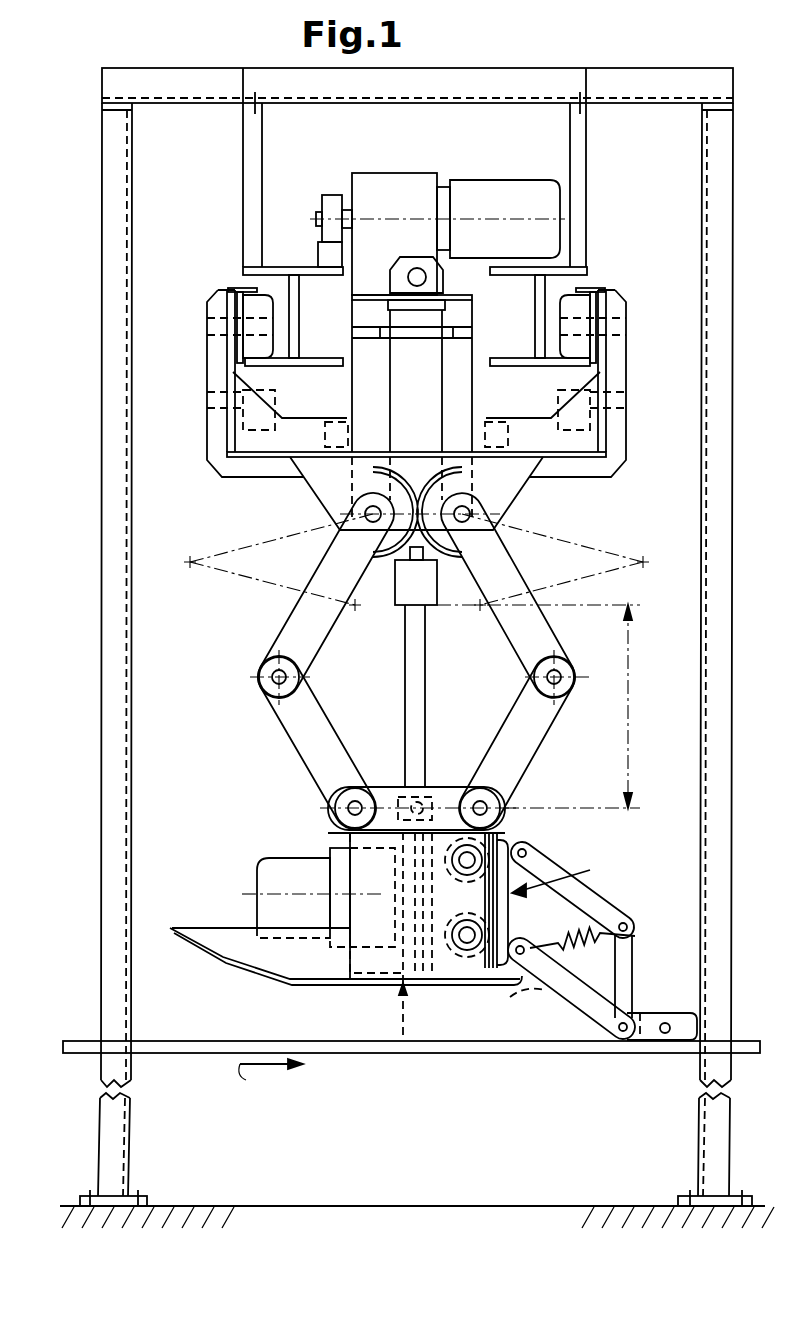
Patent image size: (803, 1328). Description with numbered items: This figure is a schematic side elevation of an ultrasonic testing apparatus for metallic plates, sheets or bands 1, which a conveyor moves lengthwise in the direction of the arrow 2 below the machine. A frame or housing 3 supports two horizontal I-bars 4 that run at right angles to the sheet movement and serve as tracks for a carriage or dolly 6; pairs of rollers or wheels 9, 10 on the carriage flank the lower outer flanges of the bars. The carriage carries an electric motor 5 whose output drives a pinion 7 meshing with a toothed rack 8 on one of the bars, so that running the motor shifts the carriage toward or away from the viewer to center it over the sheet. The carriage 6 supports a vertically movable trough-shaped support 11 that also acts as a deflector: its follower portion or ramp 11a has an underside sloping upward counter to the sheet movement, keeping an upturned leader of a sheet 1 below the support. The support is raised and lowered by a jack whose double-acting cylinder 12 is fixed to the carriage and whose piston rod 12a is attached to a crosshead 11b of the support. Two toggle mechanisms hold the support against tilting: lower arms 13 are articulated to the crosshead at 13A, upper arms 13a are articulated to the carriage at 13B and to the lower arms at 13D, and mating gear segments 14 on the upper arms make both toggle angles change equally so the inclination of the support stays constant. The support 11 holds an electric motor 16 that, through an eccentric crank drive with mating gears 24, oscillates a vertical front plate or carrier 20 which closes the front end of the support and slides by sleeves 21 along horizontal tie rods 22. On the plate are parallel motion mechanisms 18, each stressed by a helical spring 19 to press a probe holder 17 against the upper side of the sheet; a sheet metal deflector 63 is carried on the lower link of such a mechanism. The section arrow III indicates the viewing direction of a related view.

The metallic sheet 1 is at (524, 1055).
The arrow 2 is at (271, 1079).
The frame 3 is at (700, 905).
The I-bar 4 is at (258, 270).
The electric motor 5 is at (505, 195).
The carriage 6 is at (627, 468).
The pinion 7 is at (335, 196).
The toothed rack 8 is at (320, 255).
The roller 9 is at (232, 312).
The roller 10 is at (240, 380).
The trough-shaped support 11 is at (195, 922).
The ramp 11a is at (250, 973).
The crosshead 11b is at (420, 745).
The double-acting cylinder 12 is at (396, 590).
The piston rod 12a is at (428, 672).
The lower arm 13 is at (333, 743).
The upper arm 13a is at (330, 612).
The articulated connection 13A is at (500, 800).
The articulated connection 13B is at (468, 510).
The articulated connection 13D is at (558, 676).
The gear segment 14 is at (430, 560).
The electric motor 16 is at (275, 890).
The probe holder 17 is at (650, 1010).
The parallel motion mechanism 18 is at (600, 990).
The helical spring 19 is at (565, 940).
The front plate 20 is at (502, 890).
The sleeve 21 is at (500, 828).
The tie rod 22 is at (462, 950).
The mating gear 24 is at (403, 988).
The deflector 63 is at (526, 997).
The section view direction arrow III is at (563, 876).